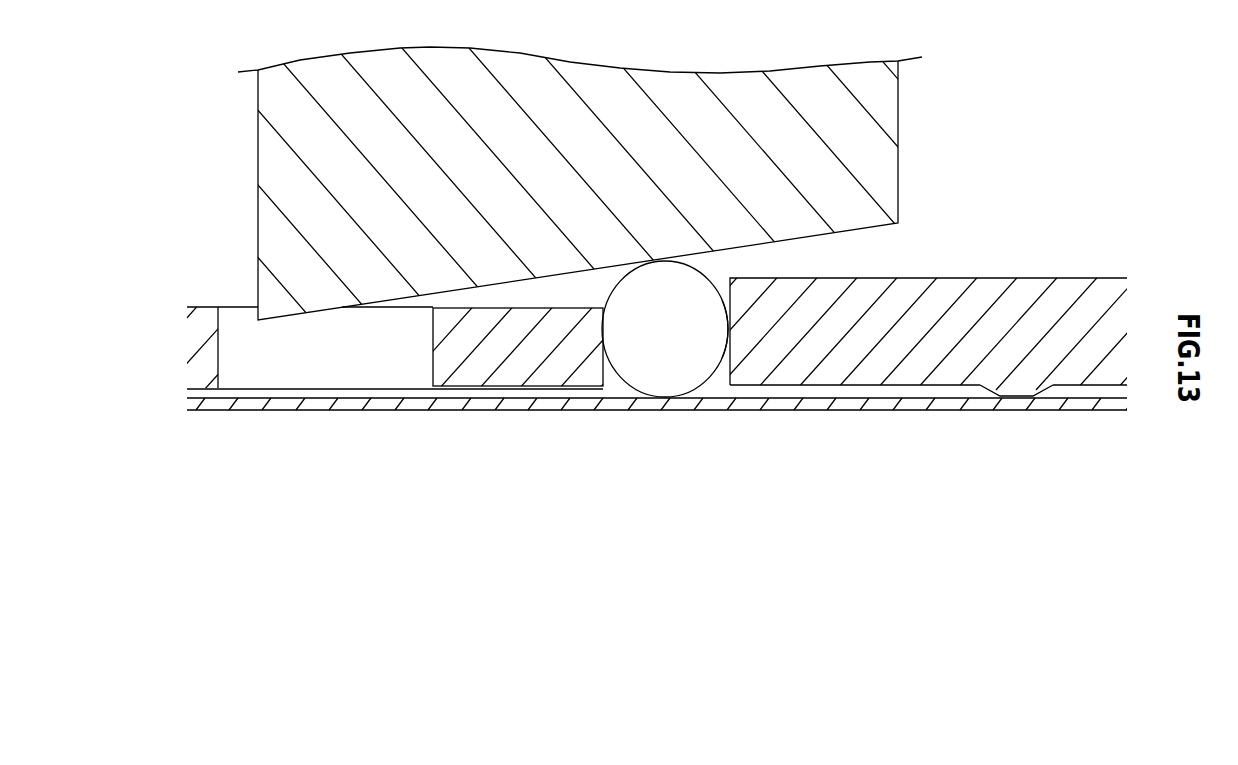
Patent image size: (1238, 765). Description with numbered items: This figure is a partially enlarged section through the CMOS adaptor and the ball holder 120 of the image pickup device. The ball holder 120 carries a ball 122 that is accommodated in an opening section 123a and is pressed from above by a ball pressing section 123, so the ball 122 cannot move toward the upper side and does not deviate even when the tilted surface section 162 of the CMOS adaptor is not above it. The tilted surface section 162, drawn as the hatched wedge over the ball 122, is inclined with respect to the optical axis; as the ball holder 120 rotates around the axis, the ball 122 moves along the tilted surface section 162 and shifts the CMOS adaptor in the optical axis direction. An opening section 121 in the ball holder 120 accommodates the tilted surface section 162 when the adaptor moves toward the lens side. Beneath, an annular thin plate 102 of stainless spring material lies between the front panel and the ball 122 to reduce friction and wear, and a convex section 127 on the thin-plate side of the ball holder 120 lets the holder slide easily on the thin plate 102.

The tilted surface section 162 is at (862, 127).
The ball holder 120 is at (1040, 277).
The convex section 127 is at (1020, 392).
The ball pressing section 123 is at (595, 313).
The ball 122 is at (670, 370).
The opening section 123a is at (728, 323).
The opening section 121 is at (430, 366).
The thin plate 102 is at (518, 405).